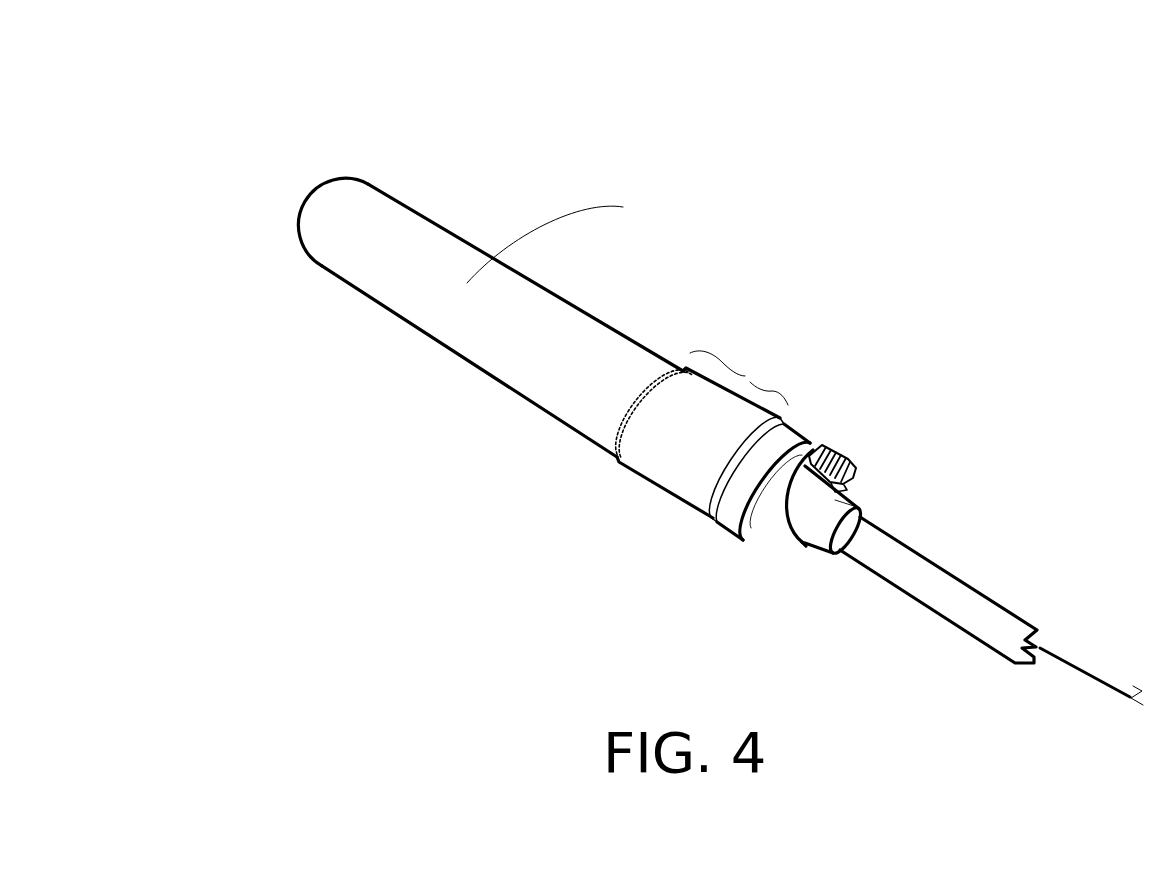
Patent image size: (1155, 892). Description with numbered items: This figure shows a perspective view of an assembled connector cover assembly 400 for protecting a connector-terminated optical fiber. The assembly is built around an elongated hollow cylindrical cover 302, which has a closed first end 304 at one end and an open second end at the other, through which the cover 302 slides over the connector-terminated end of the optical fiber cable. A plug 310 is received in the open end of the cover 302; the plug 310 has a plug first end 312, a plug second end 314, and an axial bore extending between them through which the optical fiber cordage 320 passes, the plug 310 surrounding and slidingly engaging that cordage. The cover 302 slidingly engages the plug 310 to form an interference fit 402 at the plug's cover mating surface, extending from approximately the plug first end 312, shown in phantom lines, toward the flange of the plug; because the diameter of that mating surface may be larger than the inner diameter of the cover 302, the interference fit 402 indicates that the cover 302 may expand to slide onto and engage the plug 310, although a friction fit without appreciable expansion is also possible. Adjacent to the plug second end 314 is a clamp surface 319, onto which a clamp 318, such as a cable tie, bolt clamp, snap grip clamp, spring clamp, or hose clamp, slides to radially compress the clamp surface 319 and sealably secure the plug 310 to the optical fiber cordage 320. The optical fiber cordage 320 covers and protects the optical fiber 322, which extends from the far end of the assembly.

The assembled connector cover assembly 400 is at (685, 360).
The cover 302 is at (504, 320).
The closed first end 304 is at (274, 200).
The plug first end 312 is at (609, 421).
The plug 310 is at (853, 365).
The interference fit 402 is at (752, 364).
The plug second end 314 is at (864, 552).
The clamp surface 319 is at (828, 535).
The clamp 318 is at (857, 460).
The optical fiber cordage 320 is at (943, 590).
The optical fiber 322 is at (1064, 646).